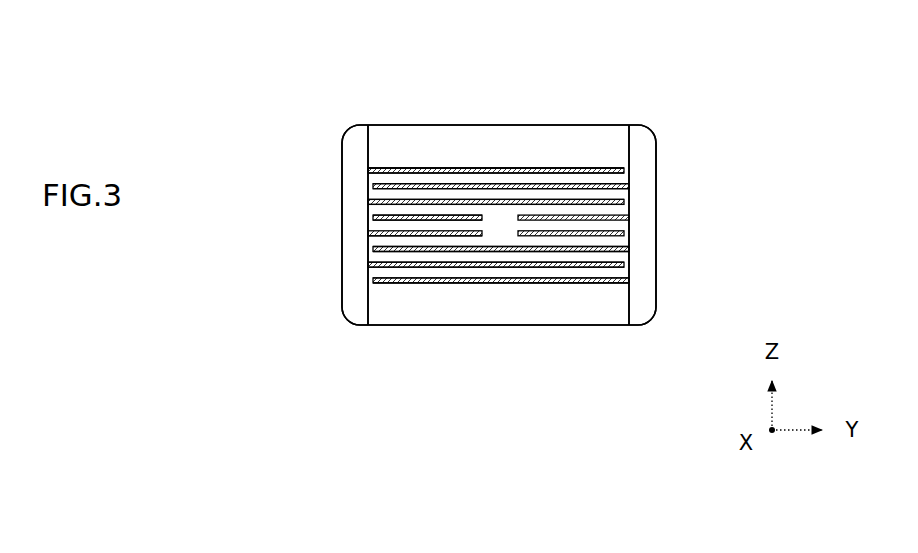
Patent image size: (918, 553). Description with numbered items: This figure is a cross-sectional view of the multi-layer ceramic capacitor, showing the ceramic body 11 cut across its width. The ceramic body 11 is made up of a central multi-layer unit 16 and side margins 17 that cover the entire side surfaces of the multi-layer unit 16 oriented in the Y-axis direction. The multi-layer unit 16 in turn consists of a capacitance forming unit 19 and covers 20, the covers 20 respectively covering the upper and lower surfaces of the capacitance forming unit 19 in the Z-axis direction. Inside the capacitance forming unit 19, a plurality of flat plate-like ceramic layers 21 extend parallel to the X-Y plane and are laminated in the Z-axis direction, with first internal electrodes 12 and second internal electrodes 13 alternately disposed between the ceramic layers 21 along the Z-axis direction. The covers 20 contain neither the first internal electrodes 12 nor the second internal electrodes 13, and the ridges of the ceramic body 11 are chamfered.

The ceramic body 11 is at (633, 84).
The first internal electrode 12 is at (403, 262).
The second internal electrode 13 is at (525, 278).
The multi-layer unit 16 is at (503, 116).
The side margin 17 is at (355, 228).
The capacitance forming unit 19 is at (485, 238).
The cover 20 is at (482, 160).
The ceramic layer 21 is at (622, 224).